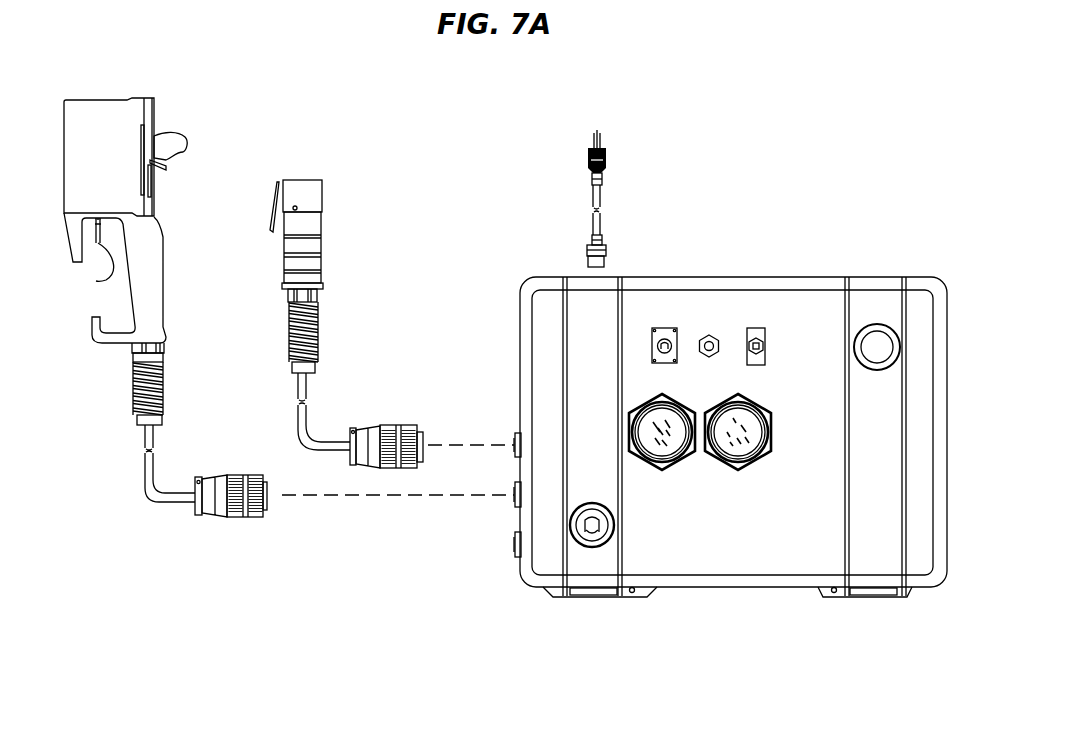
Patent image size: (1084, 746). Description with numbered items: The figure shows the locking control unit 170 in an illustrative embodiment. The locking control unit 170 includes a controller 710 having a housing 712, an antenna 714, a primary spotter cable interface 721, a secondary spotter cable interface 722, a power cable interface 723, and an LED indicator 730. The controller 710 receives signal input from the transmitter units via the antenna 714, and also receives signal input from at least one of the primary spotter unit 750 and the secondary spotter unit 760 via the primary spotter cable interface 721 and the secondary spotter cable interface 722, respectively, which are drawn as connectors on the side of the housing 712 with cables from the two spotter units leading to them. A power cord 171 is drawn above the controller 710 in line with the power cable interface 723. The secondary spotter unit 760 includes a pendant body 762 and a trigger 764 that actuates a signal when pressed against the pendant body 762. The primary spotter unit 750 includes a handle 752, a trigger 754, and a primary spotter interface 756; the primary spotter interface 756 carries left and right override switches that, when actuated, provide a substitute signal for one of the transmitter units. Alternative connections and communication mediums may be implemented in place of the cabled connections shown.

The locking control unit 170 is at (698, 82).
The power cord 171 is at (603, 195).
The controller 710 is at (709, 602).
The housing 712 is at (770, 276).
The antenna 714 is at (670, 439).
The primary spotter cable interface 721 is at (515, 500).
The secondary spotter cable interface 722 is at (515, 436).
The power cable interface 723 is at (607, 263).
The LED indicator 730 is at (877, 335).
The primary spotter unit 750 is at (113, 99).
The handle 752 is at (147, 299).
The trigger 754 is at (96, 281).
The primary spotter interface 756 is at (163, 112).
The secondary spotter unit 760 is at (307, 180).
The pendant body 762 is at (312, 219).
The trigger 764 is at (270, 219).